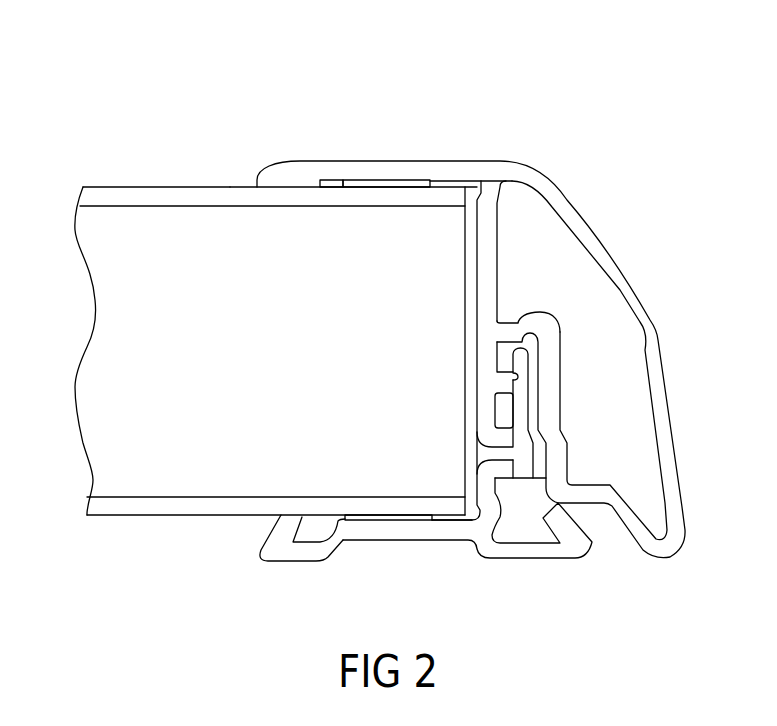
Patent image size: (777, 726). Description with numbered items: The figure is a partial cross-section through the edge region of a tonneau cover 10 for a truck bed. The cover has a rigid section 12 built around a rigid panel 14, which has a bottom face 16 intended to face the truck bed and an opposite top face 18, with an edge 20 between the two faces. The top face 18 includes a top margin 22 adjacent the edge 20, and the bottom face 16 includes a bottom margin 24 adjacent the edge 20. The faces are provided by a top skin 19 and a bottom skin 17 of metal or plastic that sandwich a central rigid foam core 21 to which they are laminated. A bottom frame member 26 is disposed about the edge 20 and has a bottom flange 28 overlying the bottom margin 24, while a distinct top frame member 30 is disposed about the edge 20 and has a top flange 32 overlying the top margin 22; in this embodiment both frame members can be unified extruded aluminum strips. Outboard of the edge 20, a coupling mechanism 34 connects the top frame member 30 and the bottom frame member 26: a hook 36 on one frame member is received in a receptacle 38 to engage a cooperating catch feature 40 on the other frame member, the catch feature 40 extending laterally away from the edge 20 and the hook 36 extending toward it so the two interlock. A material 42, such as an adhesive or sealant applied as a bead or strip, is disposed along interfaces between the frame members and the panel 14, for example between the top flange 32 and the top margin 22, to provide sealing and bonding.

The tonneau cover 10 is at (685, 157).
The rigid section 12 is at (178, 70).
The rigid panel 14 is at (165, 178).
The bottom face 16 is at (147, 522).
The bottom outer sheet layer (skin) 17 is at (93, 505).
The top face 18 is at (231, 186).
The top outer sheet layer (skin) 19 is at (83, 195).
The edge 20 is at (467, 237).
The central rigid foam core 21 is at (110, 334).
The top margin 22 is at (333, 187).
The bottom margin 24 is at (312, 515).
The bottom frame member 26 is at (429, 556).
The bottom flange 28 is at (392, 528).
The top frame member 30 is at (633, 246).
The top flange 32 is at (348, 170).
The coupling mechanism 34 is at (600, 377).
The hook 36 is at (510, 358).
The receptacle 38 is at (507, 413).
The catch feature 40 is at (507, 383).
The material 42 is at (403, 182).